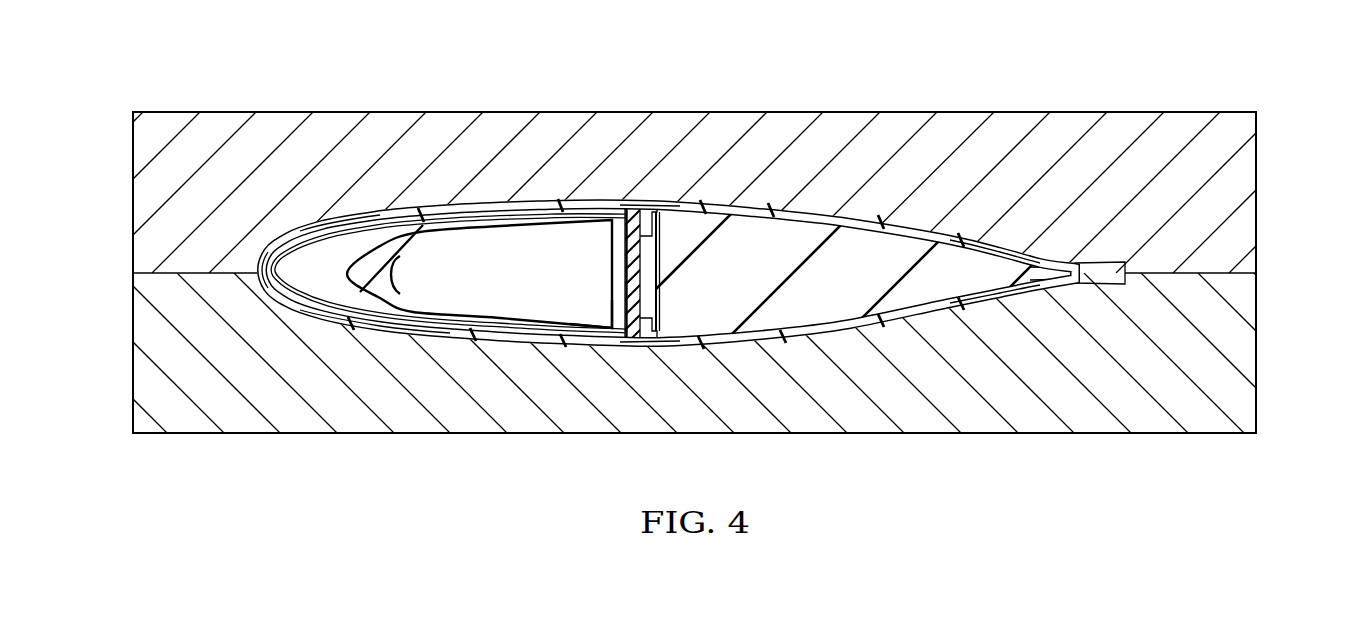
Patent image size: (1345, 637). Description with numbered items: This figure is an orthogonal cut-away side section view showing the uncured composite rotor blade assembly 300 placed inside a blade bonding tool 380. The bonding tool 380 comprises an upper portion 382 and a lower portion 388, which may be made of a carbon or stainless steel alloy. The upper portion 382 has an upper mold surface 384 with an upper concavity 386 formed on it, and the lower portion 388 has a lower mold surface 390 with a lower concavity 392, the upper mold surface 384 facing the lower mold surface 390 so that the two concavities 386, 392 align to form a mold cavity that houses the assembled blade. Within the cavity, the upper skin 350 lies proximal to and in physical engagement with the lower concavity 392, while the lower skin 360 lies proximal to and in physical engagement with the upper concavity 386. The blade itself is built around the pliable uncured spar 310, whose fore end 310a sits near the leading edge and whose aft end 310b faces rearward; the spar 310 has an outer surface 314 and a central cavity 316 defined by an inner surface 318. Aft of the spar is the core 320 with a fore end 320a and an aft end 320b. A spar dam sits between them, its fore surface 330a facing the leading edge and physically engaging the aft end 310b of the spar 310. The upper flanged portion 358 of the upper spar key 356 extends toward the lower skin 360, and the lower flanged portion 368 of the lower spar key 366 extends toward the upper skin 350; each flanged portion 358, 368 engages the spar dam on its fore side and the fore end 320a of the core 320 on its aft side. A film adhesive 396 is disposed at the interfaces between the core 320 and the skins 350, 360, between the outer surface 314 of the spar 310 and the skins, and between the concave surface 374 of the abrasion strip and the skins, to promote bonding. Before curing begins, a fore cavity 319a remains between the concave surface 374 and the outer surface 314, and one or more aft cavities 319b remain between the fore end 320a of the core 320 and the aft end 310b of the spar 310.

The composite rotor blade assembly 300 is at (840, 184).
The spar 310 is at (400, 333).
The fore end of spar 310a is at (330, 228).
The aft end of spar 310b is at (652, 235).
The outer surface of spar 314 is at (372, 255).
The central cavity 316 is at (479, 271).
The inner surface of spar 318 is at (585, 330).
The fore cavity 319a is at (342, 316).
The aft cavity 319b is at (678, 343).
The core 320 is at (902, 272).
The fore end of core 320a is at (657, 287).
The aft end of core 320b is at (1040, 268).
The fore surface of spar dam 330a is at (622, 332).
The upper skin 350 is at (992, 315).
The upper spar key 356 is at (611, 403).
The upper flanged portion 358 is at (645, 340).
The lower skin 360 is at (1008, 228).
The lower spar key 366 is at (612, 148).
The lower flanged portion 368 is at (645, 204).
The concave surface of abrasion strip 374 is at (290, 290).
The blade bonding tool 380 is at (402, 105).
The upper portion 382 is at (805, 118).
The upper mold surface 384 is at (142, 273).
The upper concavity 386 is at (505, 210).
The lower portion 388 is at (813, 427).
The lower mold surface 390 is at (1240, 273).
The lower concavity 392 is at (490, 333).
The film adhesive 396 is at (477, 203).